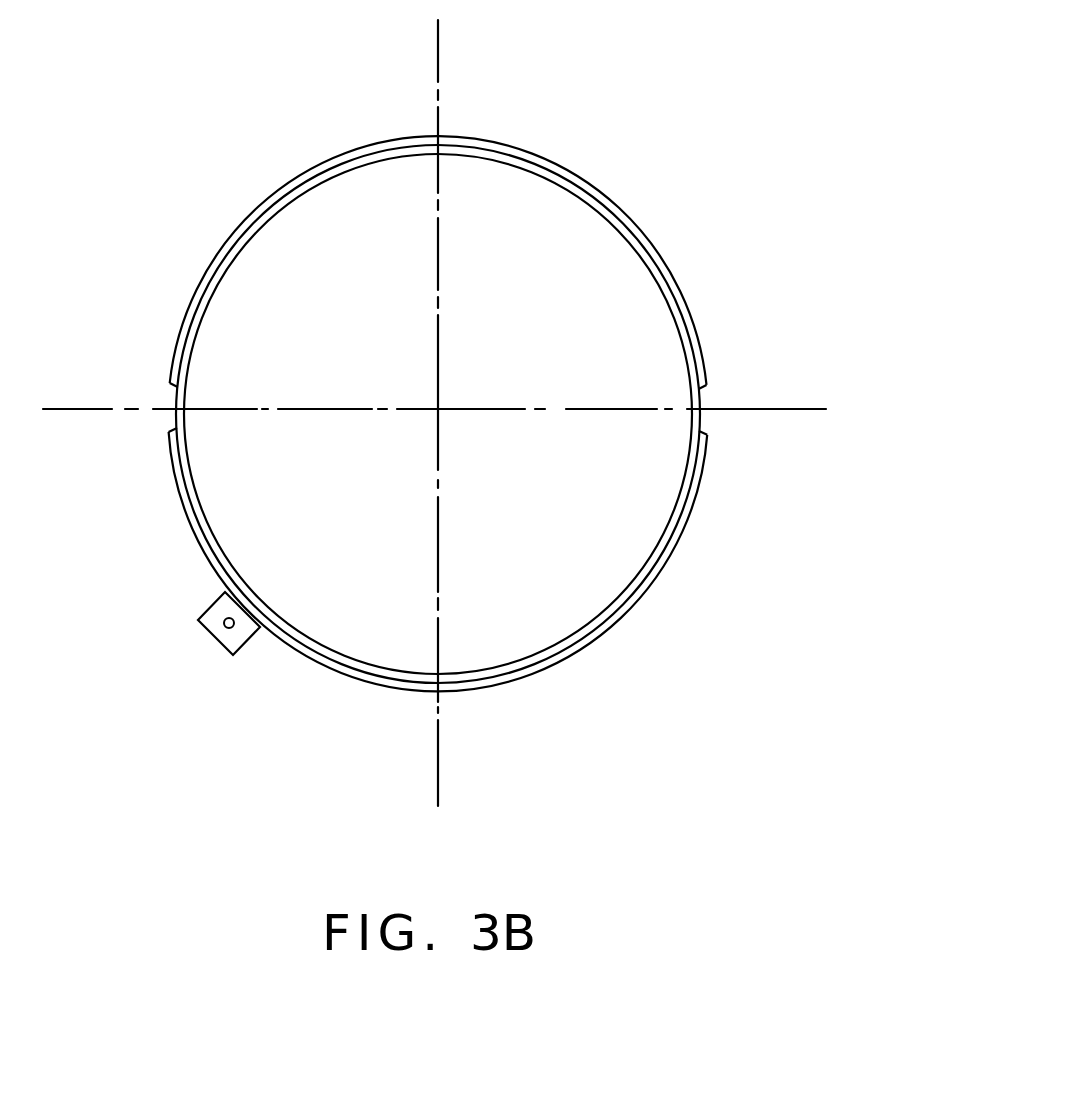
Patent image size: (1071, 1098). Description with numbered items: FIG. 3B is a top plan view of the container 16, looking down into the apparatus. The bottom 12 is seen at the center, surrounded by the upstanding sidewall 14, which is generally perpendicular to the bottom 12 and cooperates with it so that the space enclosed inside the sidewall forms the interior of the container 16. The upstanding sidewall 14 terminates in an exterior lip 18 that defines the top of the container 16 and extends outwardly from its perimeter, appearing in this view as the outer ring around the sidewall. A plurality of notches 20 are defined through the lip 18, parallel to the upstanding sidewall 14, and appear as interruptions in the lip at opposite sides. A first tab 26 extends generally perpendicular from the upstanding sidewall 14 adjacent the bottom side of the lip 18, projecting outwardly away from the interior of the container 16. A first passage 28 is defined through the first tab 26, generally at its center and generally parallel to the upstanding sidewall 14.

The bottom 12 is at (503, 500).
The upstanding sidewall 14 is at (643, 258).
The container 16 is at (655, 90).
The exterior lip 18 is at (645, 598).
The notches 20 is at (167, 393).
The first tab 26 is at (208, 608).
The first passage 28 is at (226, 630).